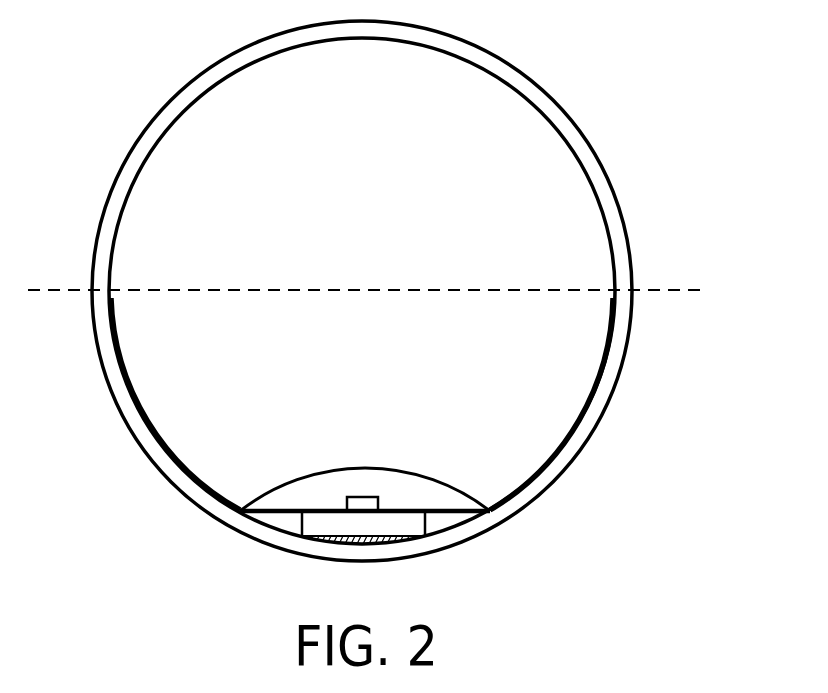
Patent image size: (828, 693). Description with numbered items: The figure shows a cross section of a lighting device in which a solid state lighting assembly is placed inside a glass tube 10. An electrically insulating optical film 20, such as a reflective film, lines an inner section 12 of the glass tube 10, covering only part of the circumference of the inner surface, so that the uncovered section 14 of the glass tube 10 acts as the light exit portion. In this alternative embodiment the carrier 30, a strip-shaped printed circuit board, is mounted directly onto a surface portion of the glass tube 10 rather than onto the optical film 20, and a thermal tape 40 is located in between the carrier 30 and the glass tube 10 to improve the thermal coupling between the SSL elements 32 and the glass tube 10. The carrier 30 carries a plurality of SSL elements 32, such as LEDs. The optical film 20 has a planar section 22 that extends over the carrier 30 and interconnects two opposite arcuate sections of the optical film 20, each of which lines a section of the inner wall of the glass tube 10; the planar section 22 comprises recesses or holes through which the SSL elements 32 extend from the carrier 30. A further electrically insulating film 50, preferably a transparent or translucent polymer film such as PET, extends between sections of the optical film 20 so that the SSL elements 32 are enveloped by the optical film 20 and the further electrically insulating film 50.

The glass tube 10 is at (613, 191).
The uncovered section 14 is at (120, 210).
The inner section 12 is at (118, 369).
The optical film 20 is at (608, 367).
The planar section 22 is at (452, 513).
The further electrically insulating film 50 is at (452, 484).
The carrier 30 is at (320, 522).
The SSL elements 32 is at (362, 506).
The thermal tape 40 is at (402, 530).